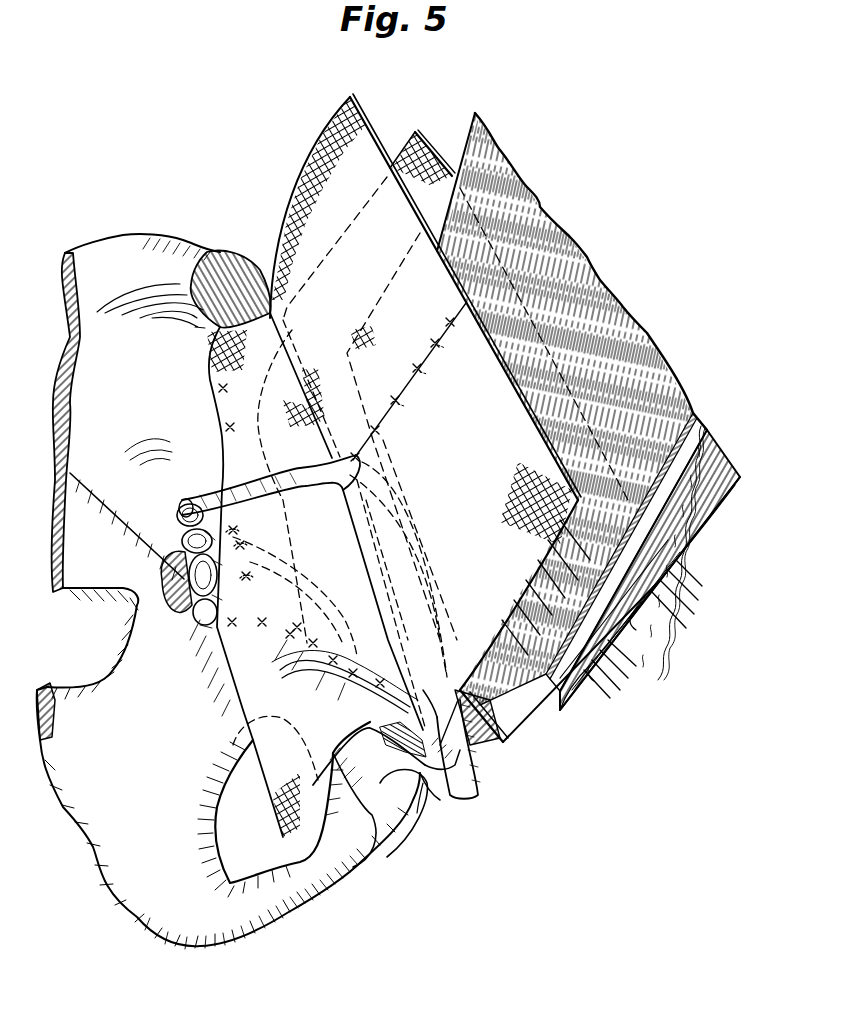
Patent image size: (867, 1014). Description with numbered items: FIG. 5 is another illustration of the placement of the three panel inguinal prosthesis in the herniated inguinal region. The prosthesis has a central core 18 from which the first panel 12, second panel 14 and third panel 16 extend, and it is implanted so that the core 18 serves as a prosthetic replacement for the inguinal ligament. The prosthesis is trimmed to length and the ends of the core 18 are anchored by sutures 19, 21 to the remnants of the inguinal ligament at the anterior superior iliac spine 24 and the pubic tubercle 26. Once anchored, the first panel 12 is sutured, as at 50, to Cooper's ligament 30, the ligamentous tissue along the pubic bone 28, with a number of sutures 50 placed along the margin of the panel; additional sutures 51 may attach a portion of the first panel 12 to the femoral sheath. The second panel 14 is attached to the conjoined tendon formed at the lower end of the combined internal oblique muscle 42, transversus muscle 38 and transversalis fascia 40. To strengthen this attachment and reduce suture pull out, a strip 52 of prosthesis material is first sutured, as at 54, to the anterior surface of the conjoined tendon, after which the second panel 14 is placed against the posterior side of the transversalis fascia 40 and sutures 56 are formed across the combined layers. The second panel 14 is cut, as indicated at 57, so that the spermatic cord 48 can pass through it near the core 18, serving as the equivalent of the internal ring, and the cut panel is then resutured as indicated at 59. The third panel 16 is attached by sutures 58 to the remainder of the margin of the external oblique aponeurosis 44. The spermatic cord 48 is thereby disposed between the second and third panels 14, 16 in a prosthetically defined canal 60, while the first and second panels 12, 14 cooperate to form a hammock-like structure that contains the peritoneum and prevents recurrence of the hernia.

The first panel 12 is at (390, 850).
The second panel 14 is at (367, 146).
The third panel 16 is at (440, 152).
The central core 18 is at (326, 308).
The sutures 19 is at (425, 807).
The sutures 21 is at (244, 262).
The anterior superior iliac spine 24 is at (222, 252).
The pubic tubercle 26 is at (445, 798).
The pubic bone 28 is at (410, 813).
The Cooper's ligament 30 is at (228, 673).
The transversus muscle 38 is at (704, 420).
The transversalis fascia 40 is at (690, 410).
The internal oblique muscle 42 is at (716, 435).
The external oblique aponeurosis 44 is at (676, 577).
The spermatic cord 48 is at (206, 498).
The sutures 50 is at (310, 668).
The sutures 51 is at (290, 633).
The strip 52 is at (628, 642).
The sutures 54 is at (557, 583).
The sutures 56 is at (476, 590).
The cut 57 is at (410, 398).
The sutures 58 is at (690, 618).
The resuturing 59 is at (414, 371).
The prosthetically defined canal 60 is at (487, 737).